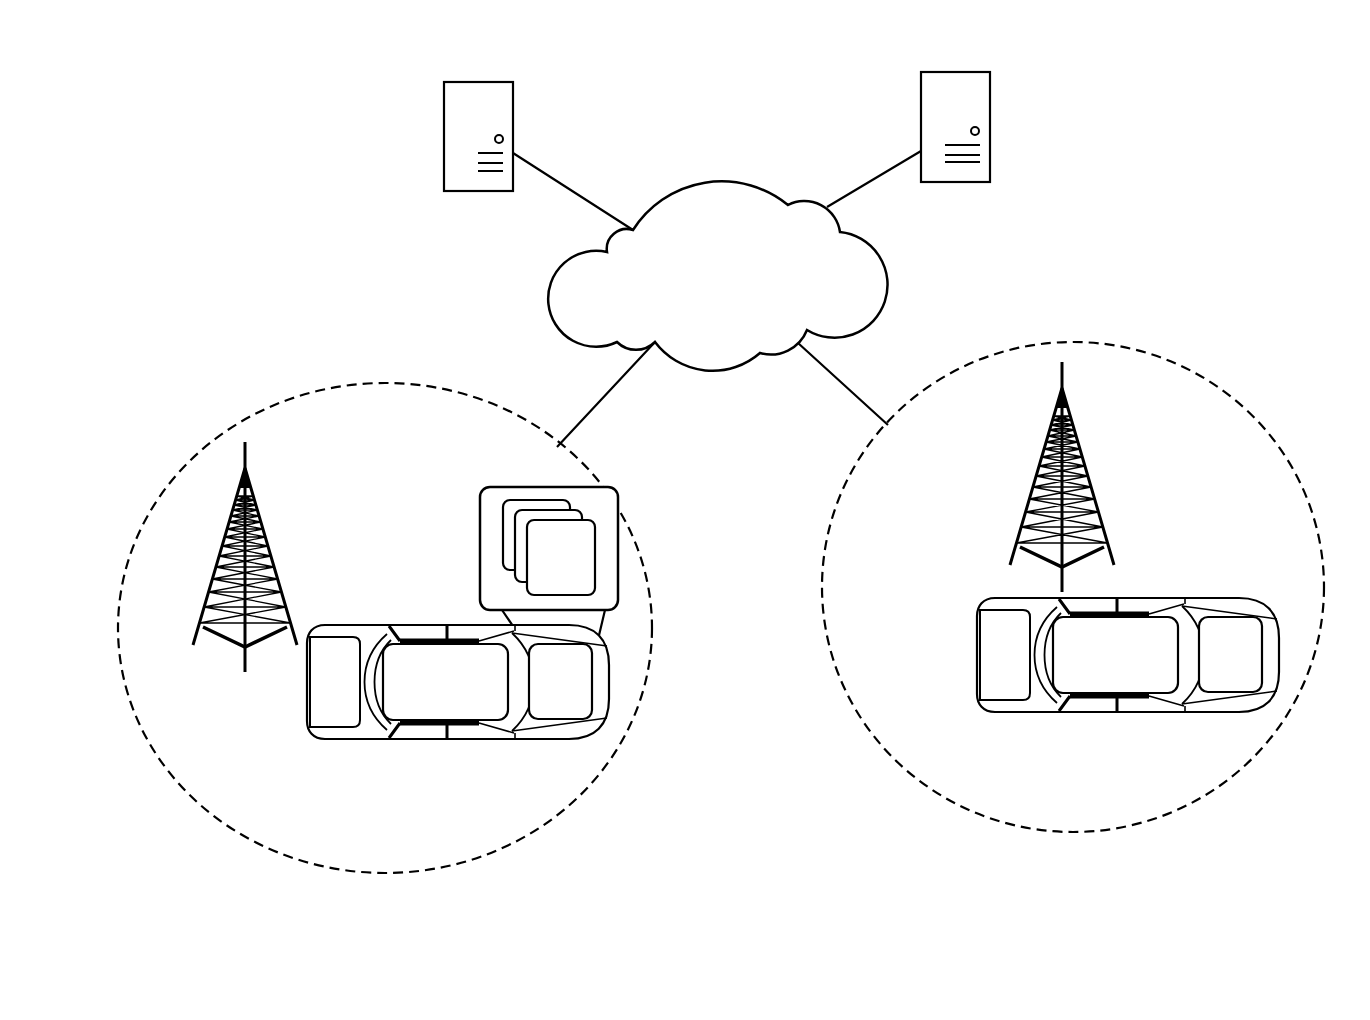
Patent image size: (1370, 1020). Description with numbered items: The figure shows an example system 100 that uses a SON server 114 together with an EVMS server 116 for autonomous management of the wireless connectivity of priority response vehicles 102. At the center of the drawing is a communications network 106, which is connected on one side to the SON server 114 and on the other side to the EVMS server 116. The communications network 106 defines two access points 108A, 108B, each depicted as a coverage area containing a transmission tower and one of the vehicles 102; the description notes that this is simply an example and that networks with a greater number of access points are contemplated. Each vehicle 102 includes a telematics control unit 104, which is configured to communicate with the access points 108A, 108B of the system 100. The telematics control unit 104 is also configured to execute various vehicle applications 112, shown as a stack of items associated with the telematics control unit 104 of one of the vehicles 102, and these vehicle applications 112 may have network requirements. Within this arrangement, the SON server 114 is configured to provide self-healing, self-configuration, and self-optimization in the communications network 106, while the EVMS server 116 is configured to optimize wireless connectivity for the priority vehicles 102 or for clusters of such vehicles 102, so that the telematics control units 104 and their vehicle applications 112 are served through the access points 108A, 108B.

The system 100 is at (230, 46).
The vehicle 102 is at (463, 709).
The telematics control unit 104 is at (895, 668).
The communications network 106 is at (738, 322).
The access point 108A is at (280, 737).
The access point 108B is at (1182, 529).
The vehicle application 112 is at (545, 569).
The SON server 114 is at (346, 189).
The EVMS server 116 is at (1047, 165).